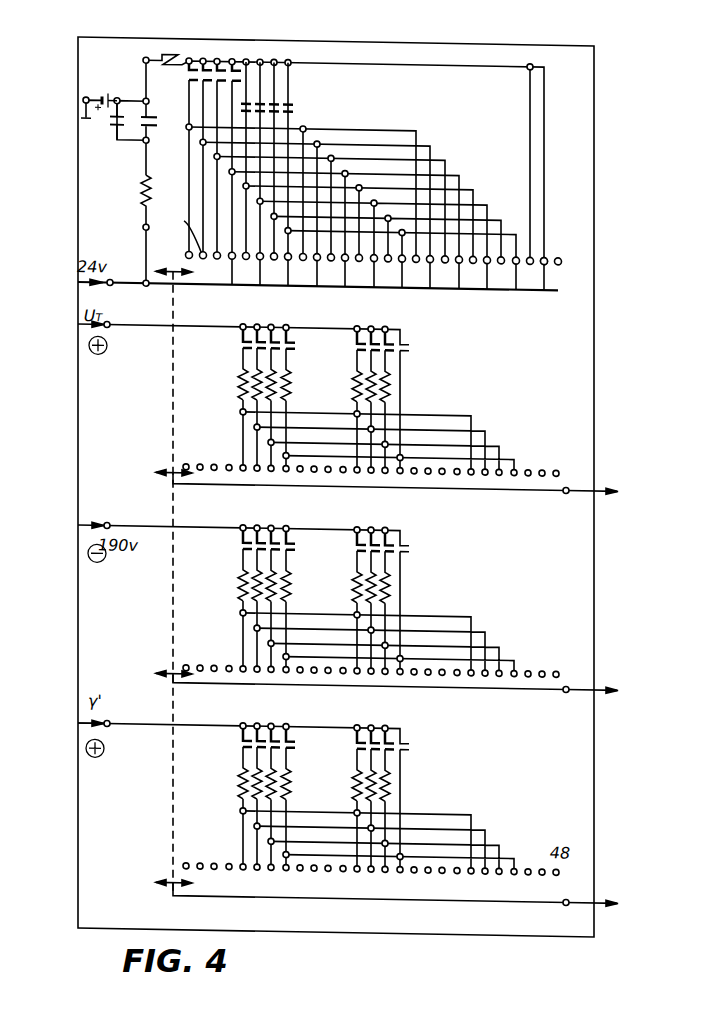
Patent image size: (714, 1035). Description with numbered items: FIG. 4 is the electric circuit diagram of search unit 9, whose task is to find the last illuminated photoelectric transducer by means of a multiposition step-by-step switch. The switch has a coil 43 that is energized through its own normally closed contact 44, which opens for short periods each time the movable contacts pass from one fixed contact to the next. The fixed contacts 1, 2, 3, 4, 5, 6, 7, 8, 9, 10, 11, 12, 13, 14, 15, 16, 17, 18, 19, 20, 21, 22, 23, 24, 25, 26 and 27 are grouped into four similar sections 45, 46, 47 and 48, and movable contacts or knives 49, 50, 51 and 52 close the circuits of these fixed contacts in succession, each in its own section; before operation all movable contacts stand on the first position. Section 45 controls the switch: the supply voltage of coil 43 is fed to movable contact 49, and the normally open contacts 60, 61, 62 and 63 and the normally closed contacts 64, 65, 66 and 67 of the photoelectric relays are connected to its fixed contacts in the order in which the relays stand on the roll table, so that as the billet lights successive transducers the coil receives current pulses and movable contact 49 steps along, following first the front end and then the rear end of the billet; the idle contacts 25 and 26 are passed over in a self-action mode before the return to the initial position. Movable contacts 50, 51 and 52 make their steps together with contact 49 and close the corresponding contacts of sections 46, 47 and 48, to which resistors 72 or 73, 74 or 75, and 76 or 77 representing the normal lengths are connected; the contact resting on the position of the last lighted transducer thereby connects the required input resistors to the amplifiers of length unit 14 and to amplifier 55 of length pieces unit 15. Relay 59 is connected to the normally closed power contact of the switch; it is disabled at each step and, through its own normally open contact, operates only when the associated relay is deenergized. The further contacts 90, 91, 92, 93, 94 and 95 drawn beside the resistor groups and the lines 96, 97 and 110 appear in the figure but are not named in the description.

The fixed contact 1 is at (187, 251).
The fixed contact 2 is at (179, 227).
The fixed contact 3 is at (205, 266).
The fixed contact 4 is at (229, 283).
The fixed contact 5 is at (248, 266).
The fixed contact 6 is at (257, 284).
The fixed contact 7 is at (276, 267).
The fixed contact 8 is at (285, 284).
The search unit 9 is at (615, 784).
The fixed contact 10 is at (313, 284).
The fixed contact 11 is at (333, 268).
The fixed contact 12 is at (341, 285).
The fixed contact 13 is at (361, 268).
The length unit 14 is at (489, 486).
The length pieces unit 15 is at (499, 589).
The fixed contact 16 is at (398, 286).
The fixed contact 17 is at (418, 269).
The fixed contact 18 is at (426, 286).
The fixed contact 19 is at (447, 270).
The fixed contact 20 is at (455, 287).
The fixed contact 21 is at (475, 270).
The fixed contact 22 is at (483, 287).
The fixed contact 23 is at (503, 271).
The fixed contact 24 is at (512, 288).
The idle fixed contact 25 is at (532, 271).
The idle fixed contact 26 is at (540, 288).
The fixed contact 27 is at (563, 272).
The coil 43 is at (133, 51).
The normally closed contact 44 is at (97, 99).
The first section 45 is at (521, 247).
The second section 46 is at (375, 455).
The third section 47 is at (375, 656).
The fourth section 48 is at (246, 338).
The movable contact 49 is at (172, 269).
The movable contact 50 is at (164, 461).
The movable contact 51 is at (164, 662).
The movable contact 52 is at (166, 871).
The amplifier 55 is at (396, 673).
The relay 59 is at (129, 226).
The normally open contact 60 is at (171, 81).
The normally open contact 61 is at (204, 56).
The normally open contact 62 is at (219, 58).
The normally open contact 63 is at (233, 56).
The normally closed contact 64 is at (247, 74).
The normally closed contact 65 is at (261, 56).
The normally closed contact 66 is at (277, 73).
The normally closed contact 67 is at (289, 56).
The resistor 72 is at (251, 373).
The resistor 73 is at (358, 375).
The resistor 74 is at (250, 574).
The resistor 75 is at (358, 576).
The resistor 76 is at (249, 772).
The resistor 77 is at (358, 774).
The switch contact 90 is at (296, 340).
The switch contacts 91 is at (360, 337).
The switch contacts 92 is at (275, 540).
The switch contacts 93 is at (360, 538).
The switch contacts 94 is at (275, 738).
The switch contacts 95 is at (360, 736).
The input terminal 96 is at (78, 735).
The output line 97 is at (397, 475).
The output line 110 is at (397, 885).